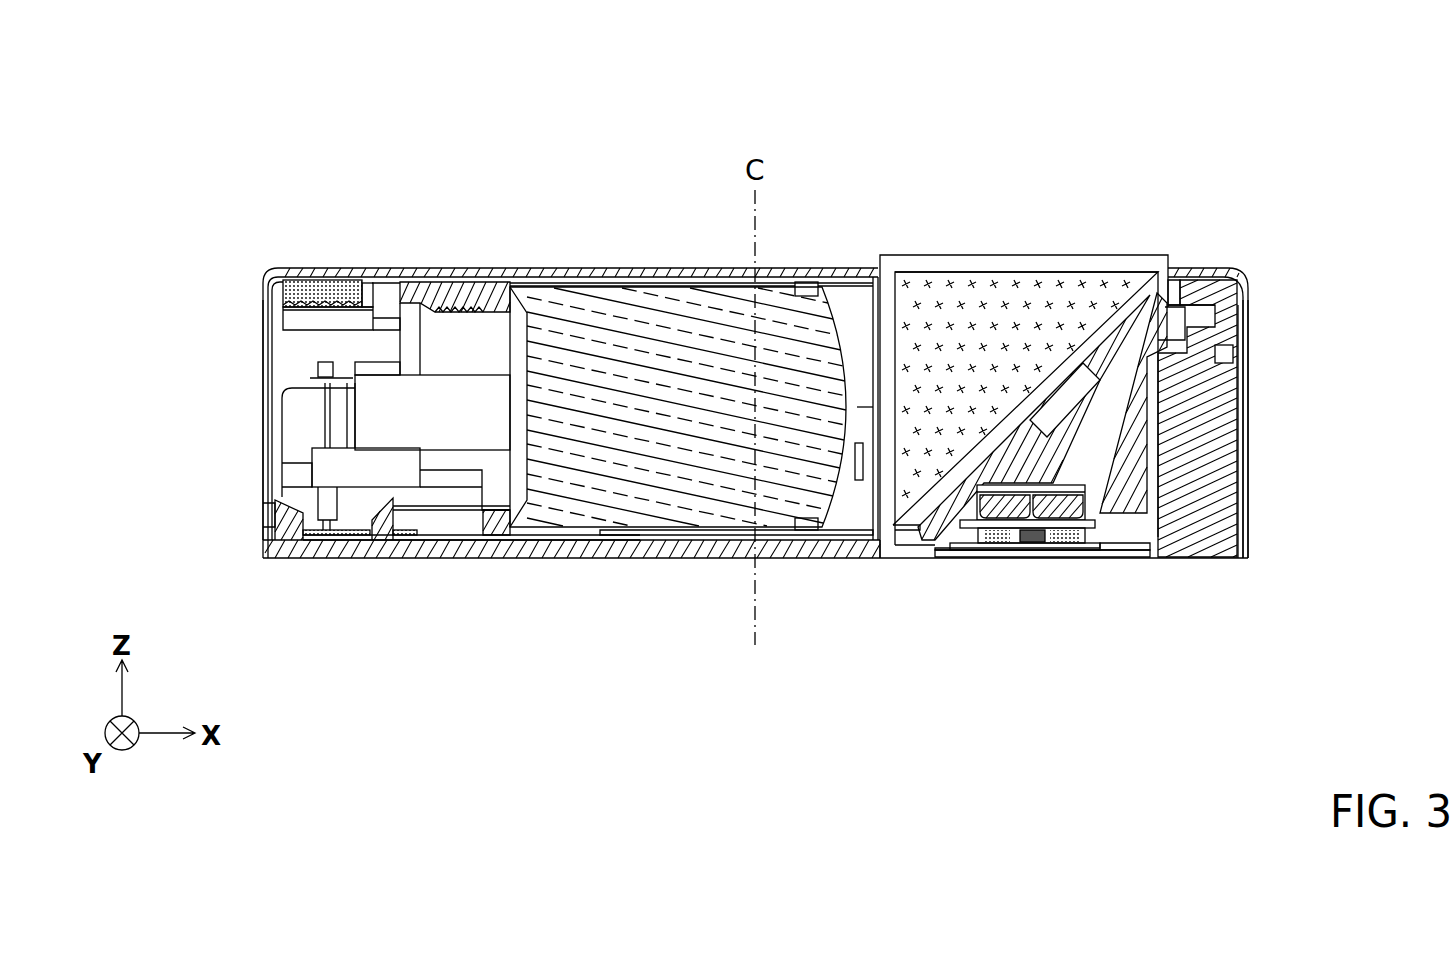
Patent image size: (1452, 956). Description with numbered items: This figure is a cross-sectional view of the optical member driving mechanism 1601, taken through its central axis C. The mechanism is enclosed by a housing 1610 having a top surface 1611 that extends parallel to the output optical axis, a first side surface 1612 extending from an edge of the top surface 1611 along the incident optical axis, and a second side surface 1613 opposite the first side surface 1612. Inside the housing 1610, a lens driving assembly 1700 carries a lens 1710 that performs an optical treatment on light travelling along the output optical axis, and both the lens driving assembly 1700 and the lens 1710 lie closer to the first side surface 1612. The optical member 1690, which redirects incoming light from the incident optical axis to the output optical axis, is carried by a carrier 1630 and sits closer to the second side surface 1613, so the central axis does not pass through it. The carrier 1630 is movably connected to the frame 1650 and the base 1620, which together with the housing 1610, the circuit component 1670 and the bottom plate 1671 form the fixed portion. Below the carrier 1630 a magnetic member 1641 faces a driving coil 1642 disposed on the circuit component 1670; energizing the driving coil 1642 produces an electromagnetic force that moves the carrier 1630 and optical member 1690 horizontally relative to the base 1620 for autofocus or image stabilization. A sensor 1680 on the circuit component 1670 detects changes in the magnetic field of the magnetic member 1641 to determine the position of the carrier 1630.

The optical member driving mechanism 1601 is at (218, 76).
The housing 1610 is at (268, 277).
The top surface 1611 is at (684, 283).
The first side surface 1612 is at (268, 433).
The second side surface 1613 is at (1243, 330).
The base 1620 is at (1200, 483).
The carrier 1630 is at (1125, 423).
The magnetic member 1641 is at (1080, 550).
The driving coil 1642 is at (985, 545).
The frame 1650 is at (1205, 295).
The circuit component 1670 is at (965, 548).
The bottom plate 1671 is at (1067, 548).
The sensor 1680 is at (1032, 545).
The optical member 1690 is at (998, 318).
The lens driving assembly 1700 is at (448, 417).
The lens 1710 is at (628, 417).